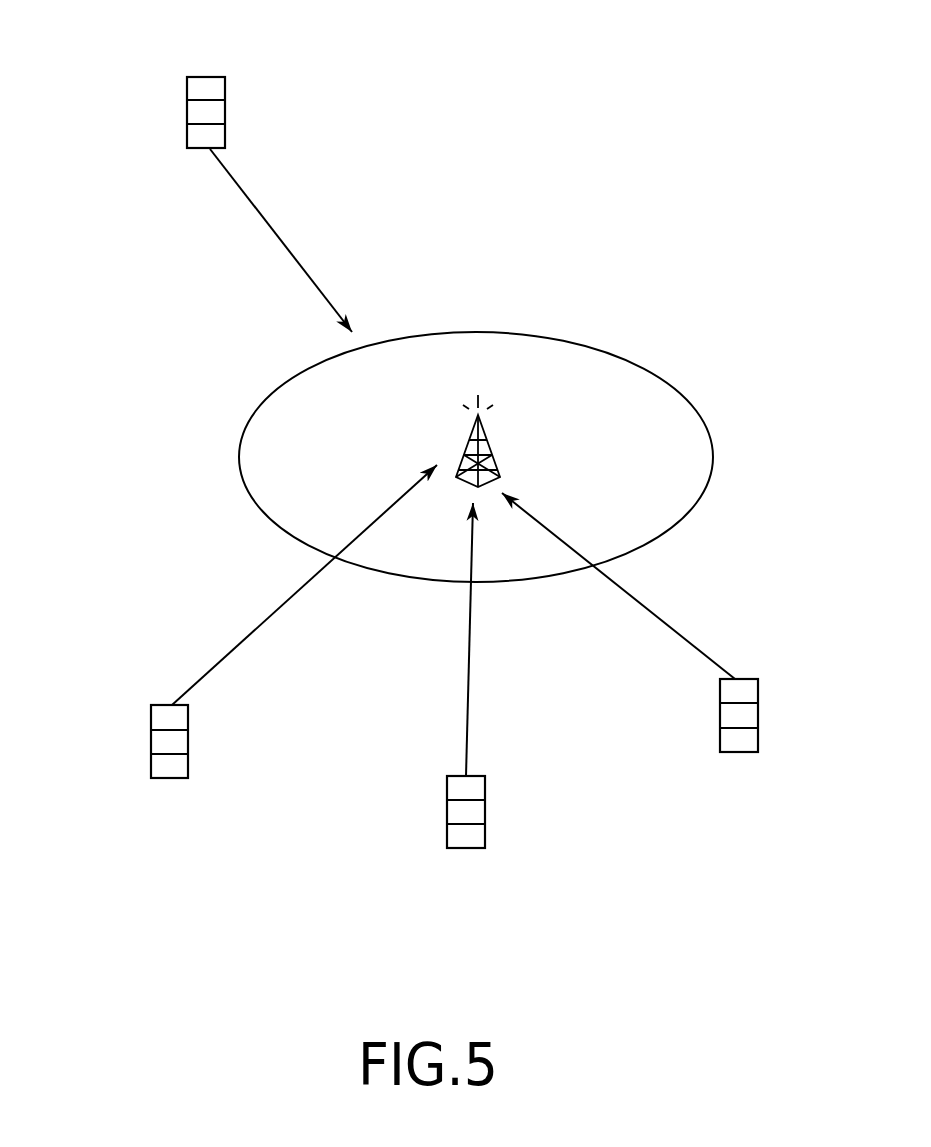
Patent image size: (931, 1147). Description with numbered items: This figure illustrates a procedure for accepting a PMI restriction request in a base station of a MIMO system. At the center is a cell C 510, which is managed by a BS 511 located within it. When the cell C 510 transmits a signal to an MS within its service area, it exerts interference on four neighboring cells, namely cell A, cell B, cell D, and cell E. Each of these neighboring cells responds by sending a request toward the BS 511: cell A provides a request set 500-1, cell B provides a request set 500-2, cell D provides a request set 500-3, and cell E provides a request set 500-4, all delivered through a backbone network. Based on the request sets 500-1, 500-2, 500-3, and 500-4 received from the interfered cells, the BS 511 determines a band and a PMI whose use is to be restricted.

The request set 500-1 is at (187, 139).
The request set 500-2 is at (151, 767).
The request set 500-3 is at (447, 837).
The request set 500-4 is at (720, 742).
The cell C 510 is at (495, 455).
The BS 511 is at (513, 434).